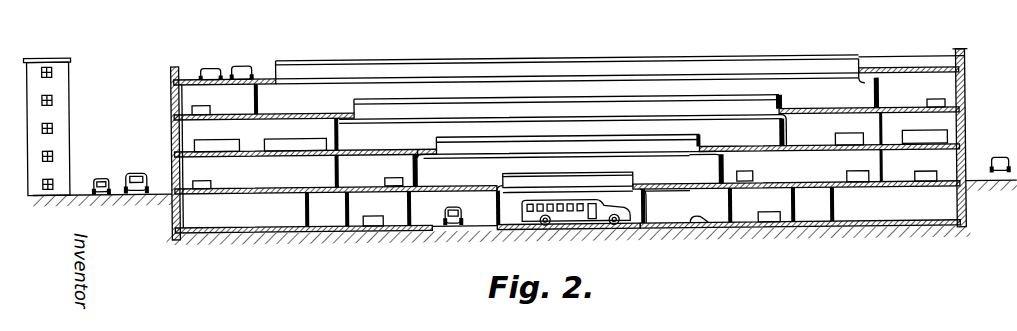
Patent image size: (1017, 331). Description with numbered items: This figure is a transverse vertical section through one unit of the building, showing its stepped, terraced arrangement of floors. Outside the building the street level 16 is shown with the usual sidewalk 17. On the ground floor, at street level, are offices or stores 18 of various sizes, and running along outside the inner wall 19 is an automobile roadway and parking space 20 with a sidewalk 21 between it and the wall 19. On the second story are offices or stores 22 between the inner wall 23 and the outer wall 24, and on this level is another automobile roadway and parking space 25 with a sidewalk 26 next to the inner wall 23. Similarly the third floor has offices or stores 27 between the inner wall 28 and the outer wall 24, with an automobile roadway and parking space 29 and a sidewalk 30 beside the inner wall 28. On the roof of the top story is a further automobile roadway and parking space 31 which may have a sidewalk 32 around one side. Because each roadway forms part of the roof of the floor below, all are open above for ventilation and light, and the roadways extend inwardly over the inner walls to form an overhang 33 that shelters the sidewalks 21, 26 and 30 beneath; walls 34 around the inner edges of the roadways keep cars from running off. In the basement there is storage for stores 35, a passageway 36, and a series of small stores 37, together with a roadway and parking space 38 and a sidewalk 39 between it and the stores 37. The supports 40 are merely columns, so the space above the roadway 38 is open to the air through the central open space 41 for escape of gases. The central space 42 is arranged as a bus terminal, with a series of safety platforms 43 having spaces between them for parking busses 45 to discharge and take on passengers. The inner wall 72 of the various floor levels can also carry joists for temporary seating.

The street level 16 is at (119, 173).
The sidewalk 17 is at (161, 188).
The offices or stores 18 is at (565, 169).
The inner wall 19 is at (726, 174).
The automobile roadway and parking space 20 is at (470, 182).
The sidewalk 21 is at (710, 188).
The offices or stores 22 is at (532, 134).
The inner wall 23 is at (800, 150).
The outer wall 24 is at (172, 112).
The automobile roadway and parking space 25 is at (382, 152).
The sidewalk 26 is at (782, 149).
The offices or stores 27 is at (568, 98).
The inner wall 28 is at (880, 76).
The automobile roadway and parking space 29 is at (312, 115).
The sidewalk 30 is at (871, 114).
The automobile roadway and parking space 31 is at (245, 67).
The sidewalk 32 is at (962, 66).
The overhang 33 is at (782, 100).
The walls 34 is at (296, 66).
The storage for stores 35 is at (578, 207).
The passageway 36 is at (328, 236).
The small stores 37 is at (392, 242).
The roadway and parking space 38 is at (472, 228).
The sidewalk 39 is at (711, 226).
The supports 40 is at (645, 212).
The central open space 41 is at (580, 186).
The central space 42 is at (634, 236).
The safety platforms 43 is at (578, 240).
The busses 45 is at (556, 232).
The inner wall 72 is at (382, 106).